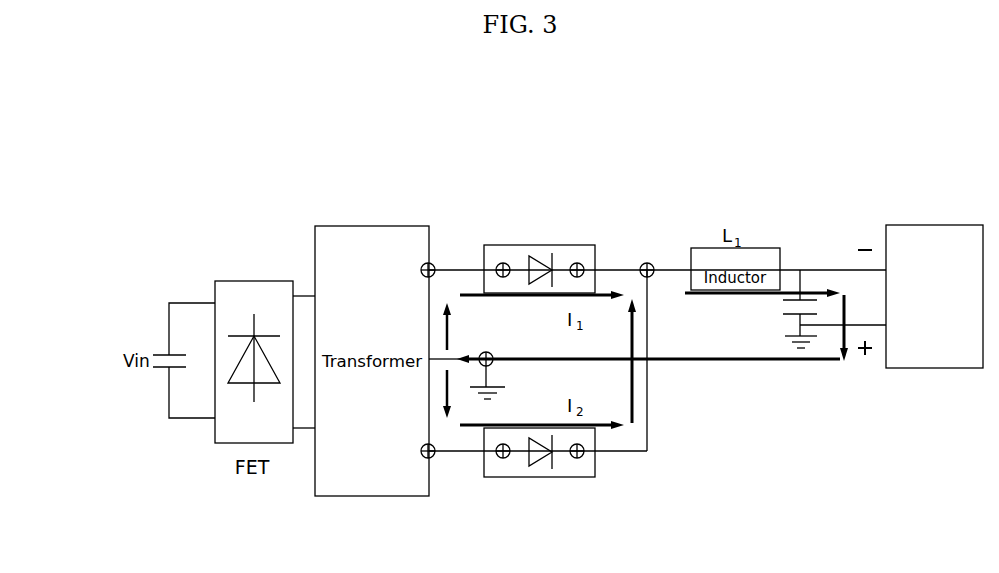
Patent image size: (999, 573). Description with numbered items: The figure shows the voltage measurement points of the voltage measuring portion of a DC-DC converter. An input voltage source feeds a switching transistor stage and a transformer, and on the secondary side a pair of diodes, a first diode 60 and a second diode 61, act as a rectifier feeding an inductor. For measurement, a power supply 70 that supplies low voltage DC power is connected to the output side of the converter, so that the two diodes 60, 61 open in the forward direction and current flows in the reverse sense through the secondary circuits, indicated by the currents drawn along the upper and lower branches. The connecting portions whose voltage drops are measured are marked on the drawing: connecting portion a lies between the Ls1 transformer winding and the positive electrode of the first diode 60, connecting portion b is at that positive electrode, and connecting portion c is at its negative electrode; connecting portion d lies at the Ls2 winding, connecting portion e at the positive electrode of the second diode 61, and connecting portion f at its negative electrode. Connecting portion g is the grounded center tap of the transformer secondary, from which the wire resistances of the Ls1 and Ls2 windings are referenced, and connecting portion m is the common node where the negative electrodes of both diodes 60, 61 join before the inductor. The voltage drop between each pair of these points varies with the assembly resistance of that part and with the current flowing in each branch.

The connecting portion a is at (434, 264).
The connecting portion b is at (503, 263).
The connecting portion c is at (577, 263).
The connecting portion d is at (431, 458).
The connecting portion e is at (503, 458).
The connecting portion f is at (577, 458).
The connecting portion g is at (490, 352).
The connecting portion m is at (647, 263).
The first diode 60 is at (535, 250).
The second diode 61 is at (541, 478).
The power supply 70 is at (933, 225).